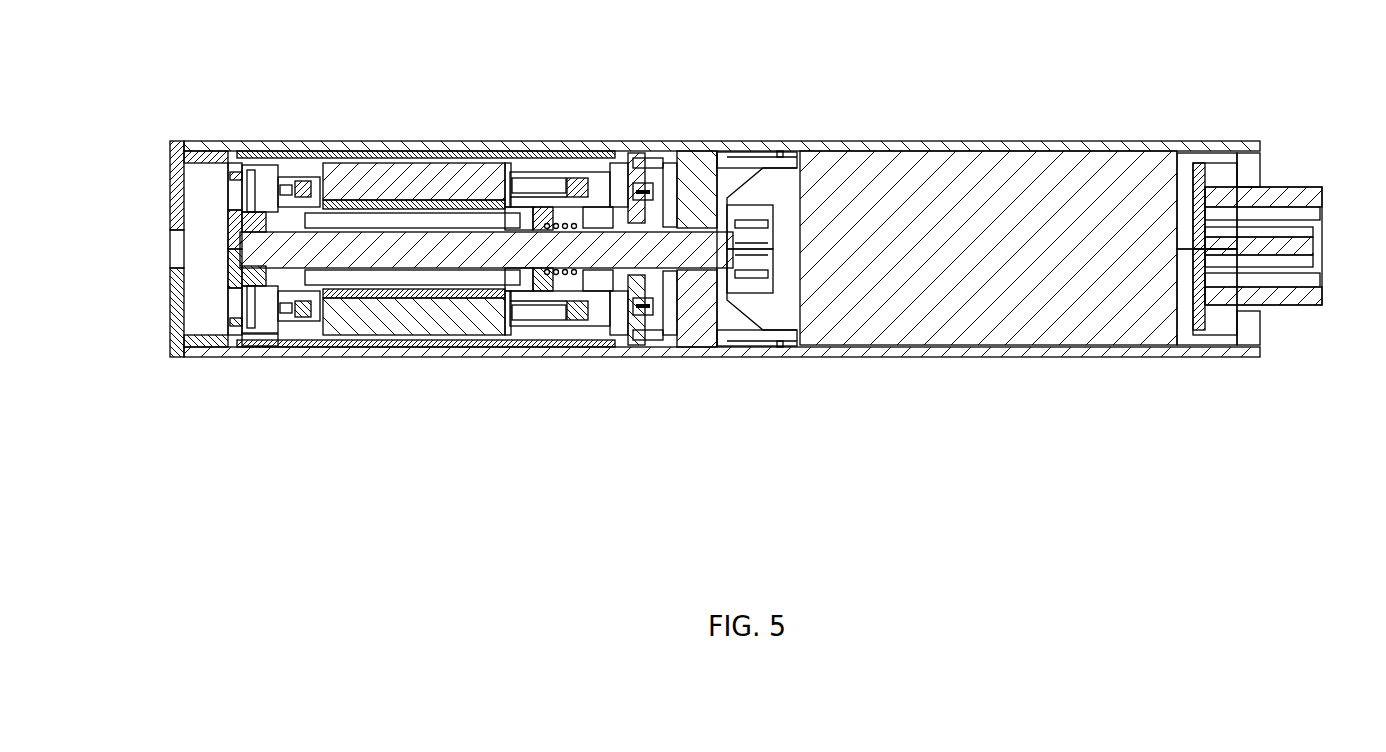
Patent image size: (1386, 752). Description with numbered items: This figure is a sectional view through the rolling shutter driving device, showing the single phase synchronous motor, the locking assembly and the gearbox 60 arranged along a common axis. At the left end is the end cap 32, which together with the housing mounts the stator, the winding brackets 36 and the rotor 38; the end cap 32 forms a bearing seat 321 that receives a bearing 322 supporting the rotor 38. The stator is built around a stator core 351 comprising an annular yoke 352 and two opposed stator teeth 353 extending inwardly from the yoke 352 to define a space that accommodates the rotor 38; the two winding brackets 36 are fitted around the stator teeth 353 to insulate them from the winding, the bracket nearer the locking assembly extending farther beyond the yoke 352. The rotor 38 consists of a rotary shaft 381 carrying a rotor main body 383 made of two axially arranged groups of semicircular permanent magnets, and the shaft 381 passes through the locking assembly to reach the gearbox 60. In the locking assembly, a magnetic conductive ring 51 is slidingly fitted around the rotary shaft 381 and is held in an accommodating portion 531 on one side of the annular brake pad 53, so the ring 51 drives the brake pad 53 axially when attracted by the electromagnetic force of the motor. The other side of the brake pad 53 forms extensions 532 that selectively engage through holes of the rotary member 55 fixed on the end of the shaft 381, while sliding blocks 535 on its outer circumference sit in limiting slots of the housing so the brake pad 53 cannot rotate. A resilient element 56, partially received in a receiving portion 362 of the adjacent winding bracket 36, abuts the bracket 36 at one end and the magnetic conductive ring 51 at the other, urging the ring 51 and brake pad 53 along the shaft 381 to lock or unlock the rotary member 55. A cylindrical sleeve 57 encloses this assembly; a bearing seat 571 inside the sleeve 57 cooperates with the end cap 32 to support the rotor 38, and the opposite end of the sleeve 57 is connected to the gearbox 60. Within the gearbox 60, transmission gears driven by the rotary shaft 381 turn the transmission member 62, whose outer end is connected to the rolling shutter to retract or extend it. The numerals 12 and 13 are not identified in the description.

The housing 12 is at (1155, 350).
The end cap 13 is at (170, 318).
The end cap 32 is at (300, 347).
The bearing seat 321 is at (244, 165).
The bearing 322 is at (692, 175).
The winding bracket 36 is at (297, 177).
The receiving portion 362 is at (521, 200).
The rotor 38 is at (486, 296).
The rotary shaft 381 is at (345, 258).
The rotor main body 383 is at (435, 218).
The stator core 351 is at (469, 345).
The yoke 352 is at (520, 300).
The stator tooth 353 is at (478, 305).
The magnetic conductive ring 51 is at (618, 332).
The brake pad 53 is at (655, 330).
The accommodating portion 531 is at (652, 330).
The extension 532 is at (645, 162).
The sliding block 535 is at (620, 162).
The rotary member 55 is at (700, 290).
The resilient element 56 is at (597, 347).
The sleeve 57 is at (772, 152).
The bearing seat 571 is at (744, 158).
The gearbox 60 is at (1093, 320).
The transmission member 62 is at (1281, 300).